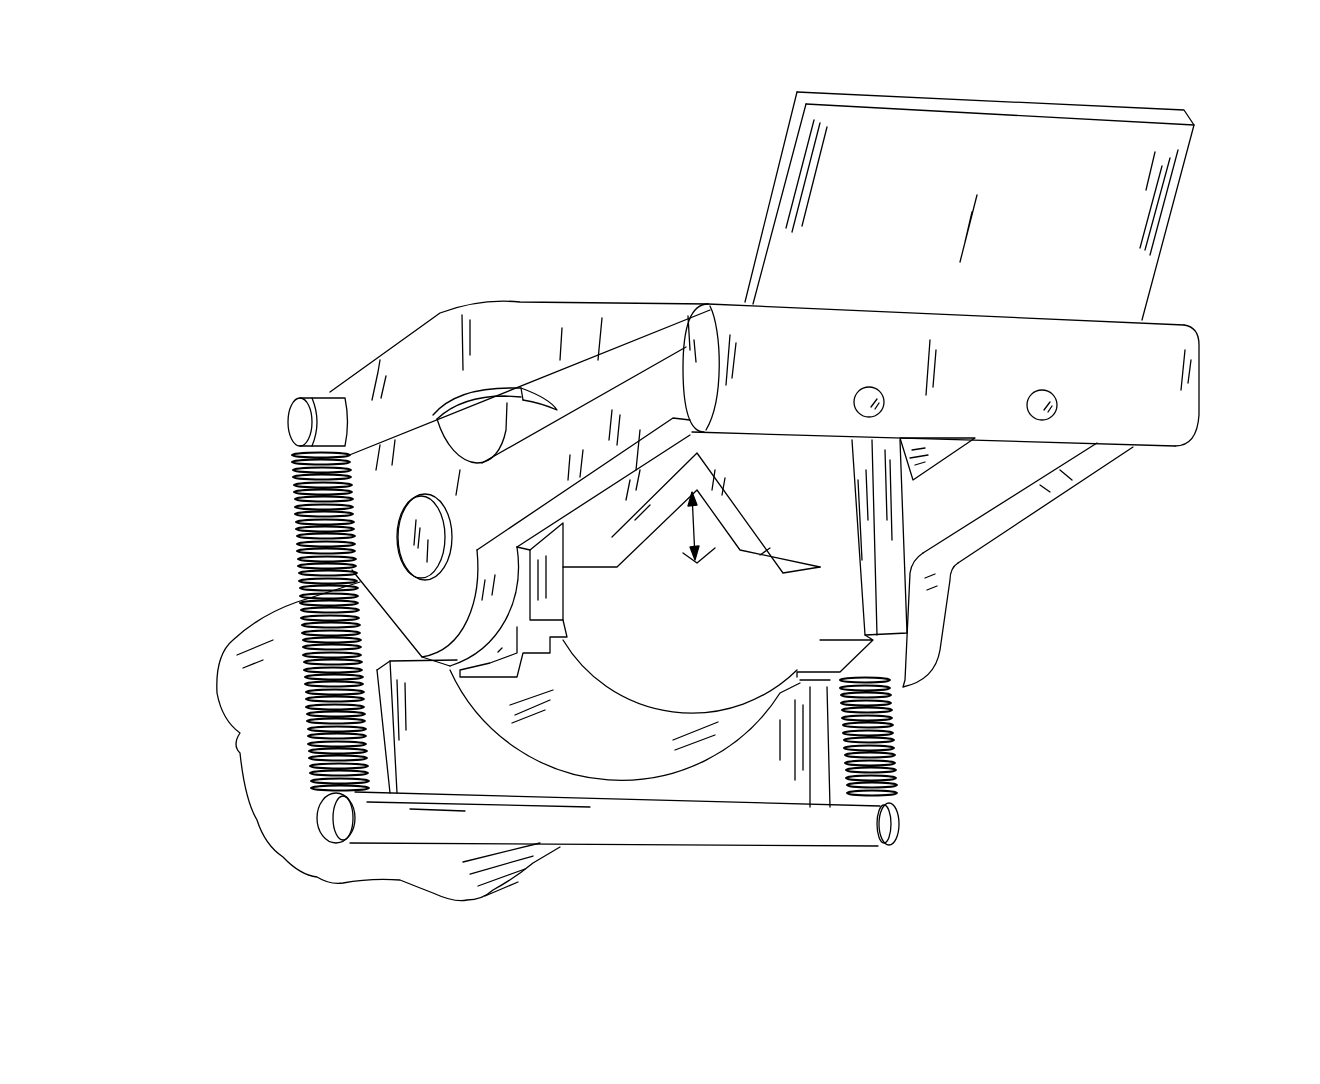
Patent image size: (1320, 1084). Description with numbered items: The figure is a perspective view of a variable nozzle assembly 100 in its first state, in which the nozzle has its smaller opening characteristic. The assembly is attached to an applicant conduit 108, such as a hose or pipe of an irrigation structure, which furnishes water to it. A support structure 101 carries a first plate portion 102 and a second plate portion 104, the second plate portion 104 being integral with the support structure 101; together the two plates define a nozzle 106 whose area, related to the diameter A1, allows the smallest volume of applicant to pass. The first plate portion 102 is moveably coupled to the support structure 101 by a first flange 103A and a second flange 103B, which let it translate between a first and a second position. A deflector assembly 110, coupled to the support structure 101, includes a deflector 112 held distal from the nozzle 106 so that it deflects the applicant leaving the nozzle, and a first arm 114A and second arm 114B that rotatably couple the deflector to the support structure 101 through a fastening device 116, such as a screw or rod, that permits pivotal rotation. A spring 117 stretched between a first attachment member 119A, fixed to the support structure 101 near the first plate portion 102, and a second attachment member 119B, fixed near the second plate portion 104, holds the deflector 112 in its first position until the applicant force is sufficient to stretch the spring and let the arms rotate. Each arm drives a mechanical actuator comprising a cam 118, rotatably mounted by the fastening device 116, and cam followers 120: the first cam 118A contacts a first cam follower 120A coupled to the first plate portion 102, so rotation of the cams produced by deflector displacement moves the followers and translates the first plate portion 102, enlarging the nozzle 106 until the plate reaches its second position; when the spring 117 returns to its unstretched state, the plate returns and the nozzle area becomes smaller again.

The variable nozzle assembly 100 is at (537, 213).
The deflector assembly 110 is at (749, 207).
The deflector 112 is at (1150, 163).
The first arm 114A is at (697, 360).
The second arm 114B is at (1077, 477).
The first plate portion 102 is at (585, 342).
The cam followers 120 is at (420, 337).
The first cam follower 120A is at (390, 357).
The cam 118 is at (470, 420).
The first cam 118A is at (443, 413).
The fastening device 116 is at (407, 553).
The first attachment member 119A is at (330, 393).
The spring 117 is at (292, 500).
The first flange 103A is at (533, 417).
The nozzle 106 is at (707, 530).
The initial area (diameter) of the nozzle A1 is at (697, 520).
The second flange 103B is at (886, 607).
The second plate portion 104 is at (743, 673).
The support structure 101 is at (897, 718).
The second attachment member 119B is at (808, 830).
The applicant conduit 108 is at (268, 657).